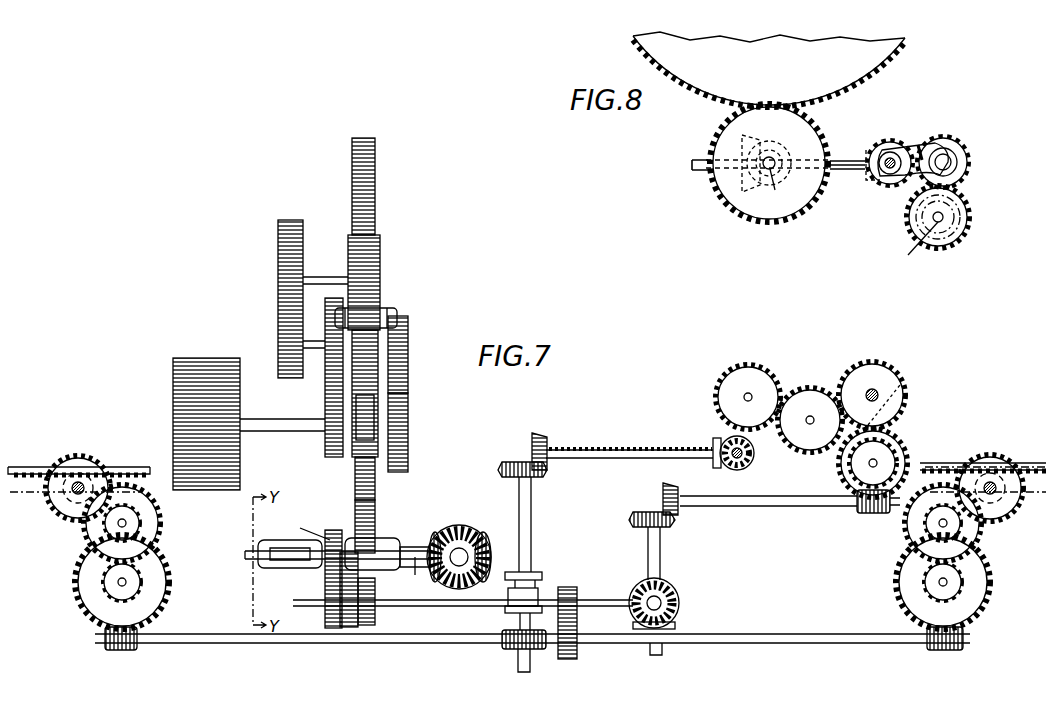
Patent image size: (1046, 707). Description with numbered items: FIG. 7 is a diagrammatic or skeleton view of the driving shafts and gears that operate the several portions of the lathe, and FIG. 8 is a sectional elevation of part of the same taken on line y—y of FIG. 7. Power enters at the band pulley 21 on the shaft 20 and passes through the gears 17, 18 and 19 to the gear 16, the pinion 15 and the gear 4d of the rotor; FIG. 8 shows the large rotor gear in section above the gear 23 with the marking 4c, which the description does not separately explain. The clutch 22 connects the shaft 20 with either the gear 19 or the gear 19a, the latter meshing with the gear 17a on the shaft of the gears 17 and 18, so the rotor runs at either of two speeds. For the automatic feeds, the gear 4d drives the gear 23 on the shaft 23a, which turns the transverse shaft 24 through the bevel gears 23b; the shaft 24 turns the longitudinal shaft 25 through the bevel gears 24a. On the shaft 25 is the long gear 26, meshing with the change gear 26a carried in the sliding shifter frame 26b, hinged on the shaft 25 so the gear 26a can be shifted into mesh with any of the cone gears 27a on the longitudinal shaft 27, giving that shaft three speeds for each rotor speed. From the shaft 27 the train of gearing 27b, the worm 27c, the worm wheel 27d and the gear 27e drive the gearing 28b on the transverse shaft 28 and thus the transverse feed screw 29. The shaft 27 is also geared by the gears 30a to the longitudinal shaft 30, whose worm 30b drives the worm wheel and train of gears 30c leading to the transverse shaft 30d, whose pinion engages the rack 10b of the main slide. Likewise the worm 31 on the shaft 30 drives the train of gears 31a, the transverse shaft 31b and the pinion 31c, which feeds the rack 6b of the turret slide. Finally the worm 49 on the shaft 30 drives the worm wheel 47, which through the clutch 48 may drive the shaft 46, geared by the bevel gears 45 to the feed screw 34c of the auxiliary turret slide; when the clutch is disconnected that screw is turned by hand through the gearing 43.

In FIG. 8, the main drive gear 4c is at (769, 69).
In FIG. 7, the gear of the rotor 4d is at (375, 202).
In FIG. 7, the rack 6b is at (79, 461).
In FIG. 7, the rack 10b is at (1030, 470).
In FIG. 7, the pinion 15 is at (380, 260).
In FIG. 7, the gear 16 is at (278, 268).
In FIG. 7, the gear 17 is at (300, 348).
In FIG. 7, the gear 17a is at (415, 354).
In FIG. 7, the gear 18 is at (325, 383).
In FIG. 7, the gear 19 is at (352, 455).
In FIG. 7, the gear 19a is at (415, 432).
In FIG. 7, the shaft 20 is at (282, 437).
In FIG. 7, the band pulley 21 is at (206, 424).
In FIG. 7, the clutch 22 is at (352, 462).
In FIG. 7, the gear 23 is at (376, 514).
In FIG. 8, the gear 23 is at (769, 163).
In FIG. 7, the shaft 23a is at (412, 547).
In FIG. 8, the shaft 23a is at (787, 188).
In FIG. 7, the bevel gears 23b is at (438, 532).
In FIG. 8, the bevel gears 23b is at (752, 122).
In FIG. 7, the transverse shaft 24 is at (466, 530).
In FIG. 8, the transverse shaft 24 is at (846, 163).
In FIG. 7, the bevel gears 24a is at (486, 540).
In FIG. 8, the bevel gears 24a is at (862, 175).
In FIG. 7, the longitudinal shaft 25 is at (417, 574).
In FIG. 8, the longitudinal shaft 25 is at (889, 175).
In FIG. 7, the gear 26 is at (342, 548).
In FIG. 8, the gear 26 is at (895, 140).
In FIG. 7, the change gear 26a is at (333, 535).
In FIG. 8, the change gear 26a is at (965, 145).
In FIG. 7, the sliding shifter frame 26b is at (292, 548).
In FIG. 8, the sliding shifter frame 26b is at (920, 142).
In FIG. 7, the longitudinal shaft 27 is at (420, 610).
In FIG. 8, the longitudinal shaft 27 is at (913, 247).
In FIG. 7, the cone gears 27a is at (340, 582).
In FIG. 8, the cone gears 27a is at (960, 245).
In FIG. 7, the train of gearing 27b is at (680, 590).
In FIG. 7, the worm 27c is at (873, 511).
In FIG. 7, the worm wheel 27d is at (873, 463).
In FIG. 7, the gear 27e is at (883, 457).
In FIG. 7, the transverse shaft 28 is at (872, 395).
In FIG. 7, the gearing 28b is at (810, 407).
In FIG. 7, the feed screw 29 is at (748, 397).
In FIG. 7, the longitudinal shaft 30 is at (532, 648).
In FIG. 7, the gears 30a is at (585, 623).
In FIG. 7, the worm 30b is at (945, 651).
In FIG. 7, the worm wheel and train of gears 30c is at (958, 557).
In FIG. 7, the transverse shaft 30d is at (996, 492).
In FIG. 7, the worm 31 is at (121, 650).
In FIG. 7, the train of gears 31a is at (137, 582).
In FIG. 7, the transverse shaft 31b is at (80, 505).
In FIG. 7, the pinion 31c is at (70, 490).
In FIG. 7, the feed screw 34c is at (629, 442).
In FIG. 7, the gearing 43 is at (733, 462).
In FIG. 7, the bevel gears 45 is at (527, 463).
In FIG. 7, the shaft 46 is at (533, 545).
In FIG. 7, the worm wheel 47 is at (502, 648).
In FIG. 7, the clutch 48 is at (505, 620).
In FIG. 7, the worm 49 is at (532, 666).